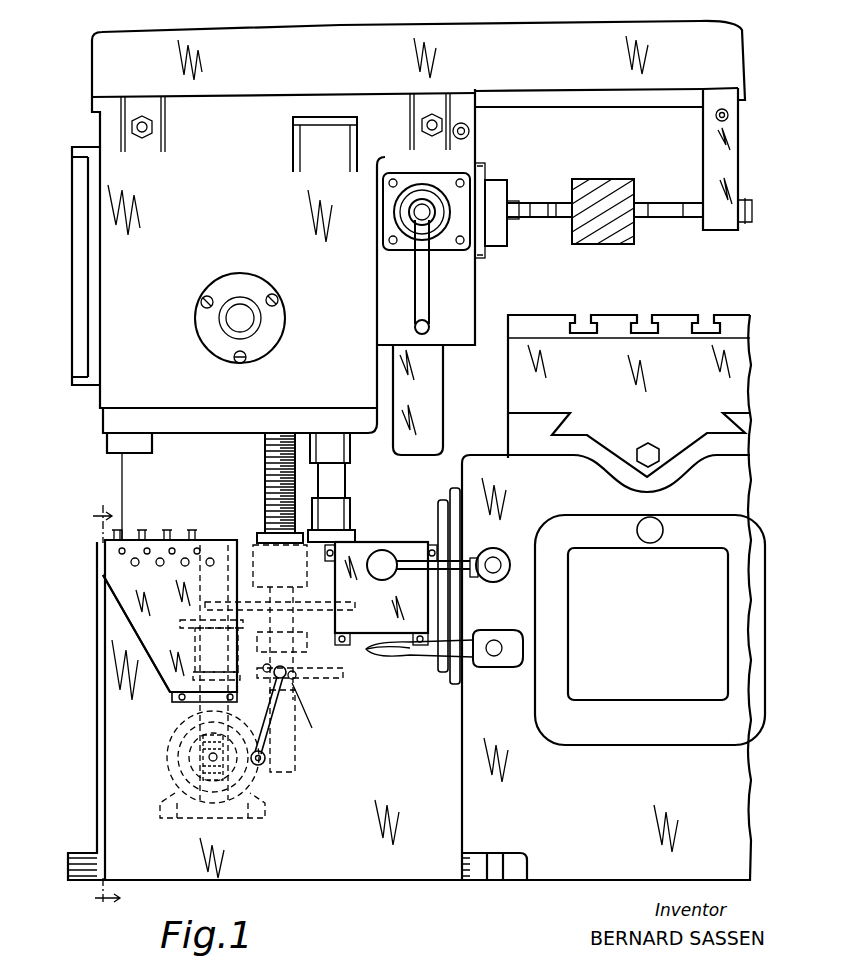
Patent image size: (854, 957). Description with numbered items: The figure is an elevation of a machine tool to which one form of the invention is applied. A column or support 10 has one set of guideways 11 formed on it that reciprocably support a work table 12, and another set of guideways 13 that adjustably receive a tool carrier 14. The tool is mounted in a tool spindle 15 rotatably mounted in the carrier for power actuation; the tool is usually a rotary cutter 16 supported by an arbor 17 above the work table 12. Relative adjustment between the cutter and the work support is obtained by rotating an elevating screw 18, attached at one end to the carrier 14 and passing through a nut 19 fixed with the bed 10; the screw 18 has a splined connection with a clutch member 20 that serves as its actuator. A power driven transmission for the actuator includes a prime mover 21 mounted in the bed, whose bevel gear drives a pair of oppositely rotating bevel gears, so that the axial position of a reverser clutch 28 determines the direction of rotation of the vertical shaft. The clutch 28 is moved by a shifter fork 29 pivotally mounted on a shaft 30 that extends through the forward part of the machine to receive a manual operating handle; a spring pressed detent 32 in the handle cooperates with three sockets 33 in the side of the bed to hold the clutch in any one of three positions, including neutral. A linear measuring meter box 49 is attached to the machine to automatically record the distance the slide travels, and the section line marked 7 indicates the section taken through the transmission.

The section line 7- 7 is at (96, 707).
The column or support 10 is at (112, 722).
The guideways 11 is at (557, 427).
The work table 12 is at (546, 285).
The guideways 13 is at (444, 404).
The tool carrier 14 is at (112, 127).
The tool spindle 15 is at (492, 175).
The rotary cutter 16 is at (599, 244).
The arbor 17 is at (662, 222).
The elevating screw 18 is at (266, 480).
The nut 19 is at (263, 533).
The clutch member 20 is at (302, 638).
The prime mover 21 is at (165, 767).
The reverser clutch 28 is at (205, 752).
The shifter fork 29 is at (240, 765).
The shaft 30 is at (263, 765).
The spring pressed detent 32 is at (299, 727).
The sockets 33 is at (303, 678).
The linear measuring meter box 49 is at (133, 602).